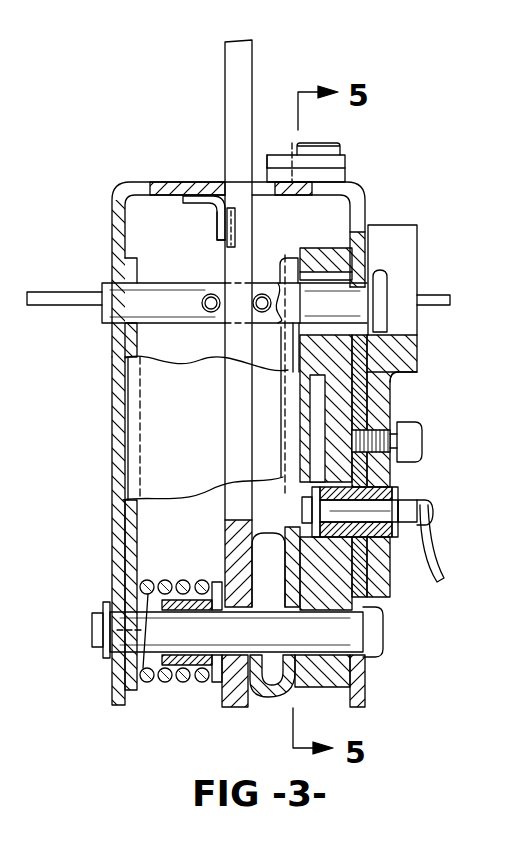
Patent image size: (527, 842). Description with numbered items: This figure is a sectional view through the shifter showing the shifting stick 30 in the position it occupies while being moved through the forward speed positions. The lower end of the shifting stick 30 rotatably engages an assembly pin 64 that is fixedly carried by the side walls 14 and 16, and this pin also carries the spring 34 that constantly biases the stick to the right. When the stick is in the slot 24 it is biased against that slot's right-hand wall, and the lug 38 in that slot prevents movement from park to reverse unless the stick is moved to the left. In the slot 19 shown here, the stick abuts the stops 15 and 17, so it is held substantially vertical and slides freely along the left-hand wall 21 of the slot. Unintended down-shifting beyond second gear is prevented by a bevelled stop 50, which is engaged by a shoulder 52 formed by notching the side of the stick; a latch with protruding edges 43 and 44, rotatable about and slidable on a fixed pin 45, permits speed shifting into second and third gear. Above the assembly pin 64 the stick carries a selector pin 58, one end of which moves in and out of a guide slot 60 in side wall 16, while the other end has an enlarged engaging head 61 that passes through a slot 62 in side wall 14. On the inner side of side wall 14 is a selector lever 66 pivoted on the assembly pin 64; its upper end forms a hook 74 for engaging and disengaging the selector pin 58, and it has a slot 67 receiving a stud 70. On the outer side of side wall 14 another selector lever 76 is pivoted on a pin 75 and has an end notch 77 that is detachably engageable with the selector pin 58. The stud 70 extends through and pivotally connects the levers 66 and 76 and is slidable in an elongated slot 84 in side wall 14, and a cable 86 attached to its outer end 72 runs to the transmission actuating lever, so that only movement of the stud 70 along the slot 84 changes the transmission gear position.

The side wall 14 is at (362, 693).
The stop 15 is at (250, 541).
The side wall 16 is at (110, 574).
The stop 17 is at (255, 696).
The slot 19 is at (270, 197).
The left-hand wall 21 is at (220, 198).
The slot 24 is at (125, 184).
The shifting stick 30 is at (245, 82).
The spring 34 is at (160, 686).
The lug 38 is at (160, 190).
The edge 43 is at (338, 163).
The edge 44 is at (267, 170).
The fixed pin 45 is at (318, 145).
The stop 50 is at (227, 225).
The shoulder 52 is at (237, 212).
The selector pin 58 is at (207, 275).
The guide slot 60 is at (110, 328).
The engaging head 61 is at (380, 313).
The slot 62 is at (415, 265).
The assembly pin 64 is at (375, 641).
The selector lever 66 is at (340, 413).
The slot 67 is at (333, 458).
The stud 70 is at (380, 508).
The outer end 72 is at (432, 504).
The hook 74 is at (330, 270).
The pin 75 is at (412, 446).
The selector lever 76 is at (400, 388).
The end notch 77 is at (420, 279).
The elongated slot 84 is at (390, 590).
The cable 86 is at (438, 573).